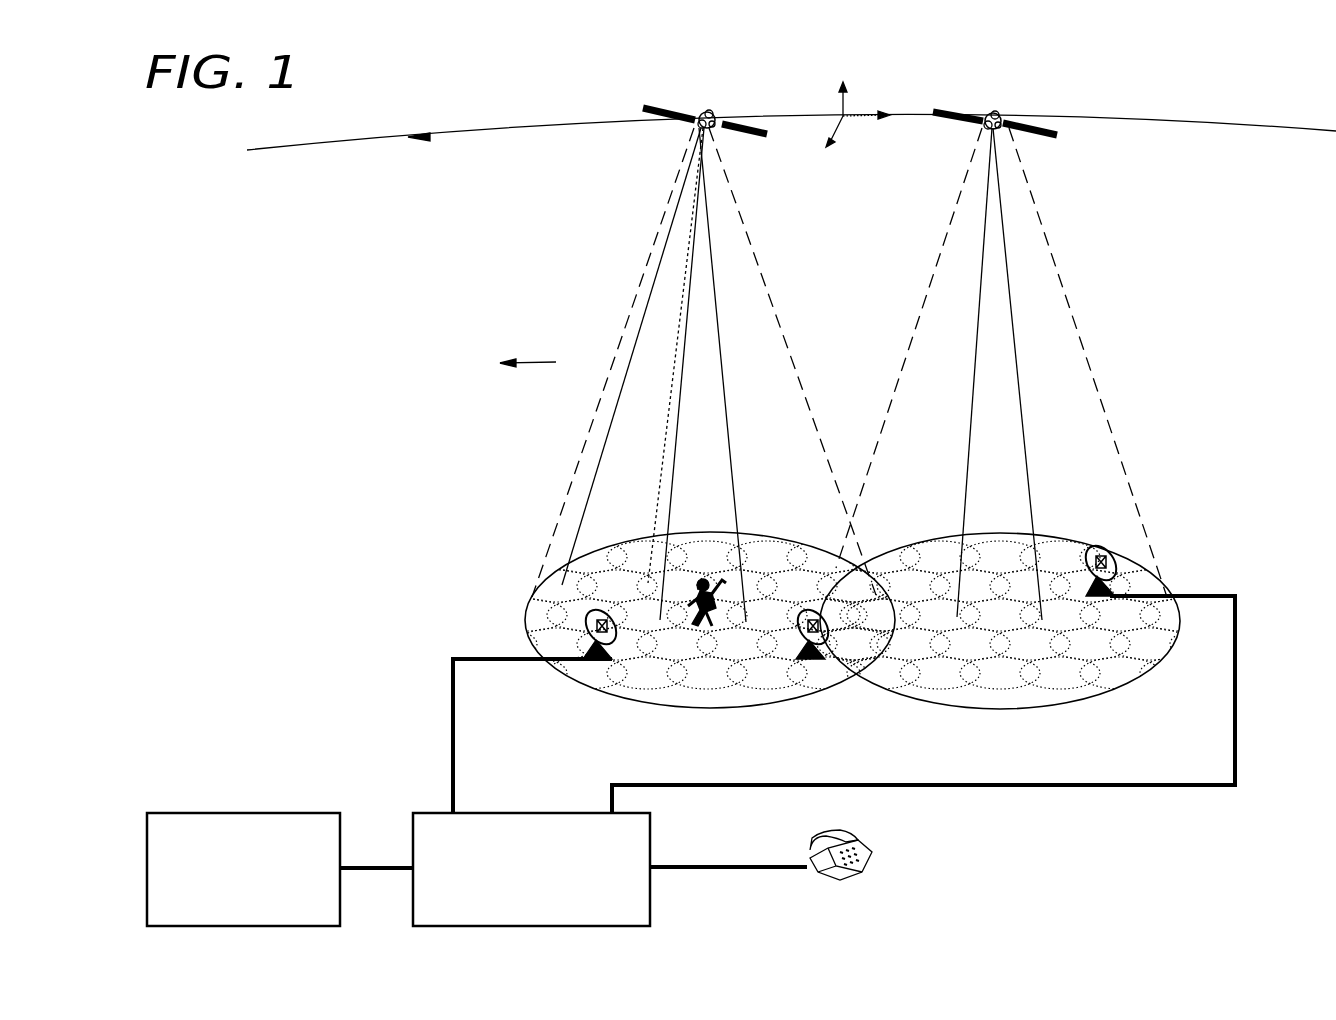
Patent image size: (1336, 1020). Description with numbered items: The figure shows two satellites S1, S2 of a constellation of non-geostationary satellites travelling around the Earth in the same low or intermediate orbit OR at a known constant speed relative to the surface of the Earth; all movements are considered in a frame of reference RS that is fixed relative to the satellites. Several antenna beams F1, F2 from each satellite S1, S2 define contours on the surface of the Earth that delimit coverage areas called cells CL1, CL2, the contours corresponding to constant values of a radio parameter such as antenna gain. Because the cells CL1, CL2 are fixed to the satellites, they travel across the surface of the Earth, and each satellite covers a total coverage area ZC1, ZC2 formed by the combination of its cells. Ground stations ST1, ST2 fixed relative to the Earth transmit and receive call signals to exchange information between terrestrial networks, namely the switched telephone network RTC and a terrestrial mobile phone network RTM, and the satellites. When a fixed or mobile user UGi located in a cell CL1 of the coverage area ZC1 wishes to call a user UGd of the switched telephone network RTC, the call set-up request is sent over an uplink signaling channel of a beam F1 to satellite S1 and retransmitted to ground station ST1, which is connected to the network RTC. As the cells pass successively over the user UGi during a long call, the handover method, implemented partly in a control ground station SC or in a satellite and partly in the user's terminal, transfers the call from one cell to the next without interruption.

The orbit OR is at (1152, 120).
The frame of reference RS is at (843, 116).
The satellite S1 is at (656, 106).
The satellite S2 is at (966, 108).
The antenna beam F1 is at (700, 258).
The antenna beam F2 is at (1000, 268).
The total coverage area ZC1 is at (707, 643).
The total coverage area ZC2 is at (1000, 650).
The cell CL1 is at (657, 695).
The cell CL2 is at (1068, 690).
The ground station ST1 is at (586, 626).
The ground station ST2 is at (1112, 573).
The control ground station SC is at (822, 642).
The fixed or mobile user UGi is at (712, 586).
The called fixed user UGd is at (872, 850).
The terrestrial mobile phone network RTM is at (147, 866).
The switched telephone network RTC is at (650, 905).